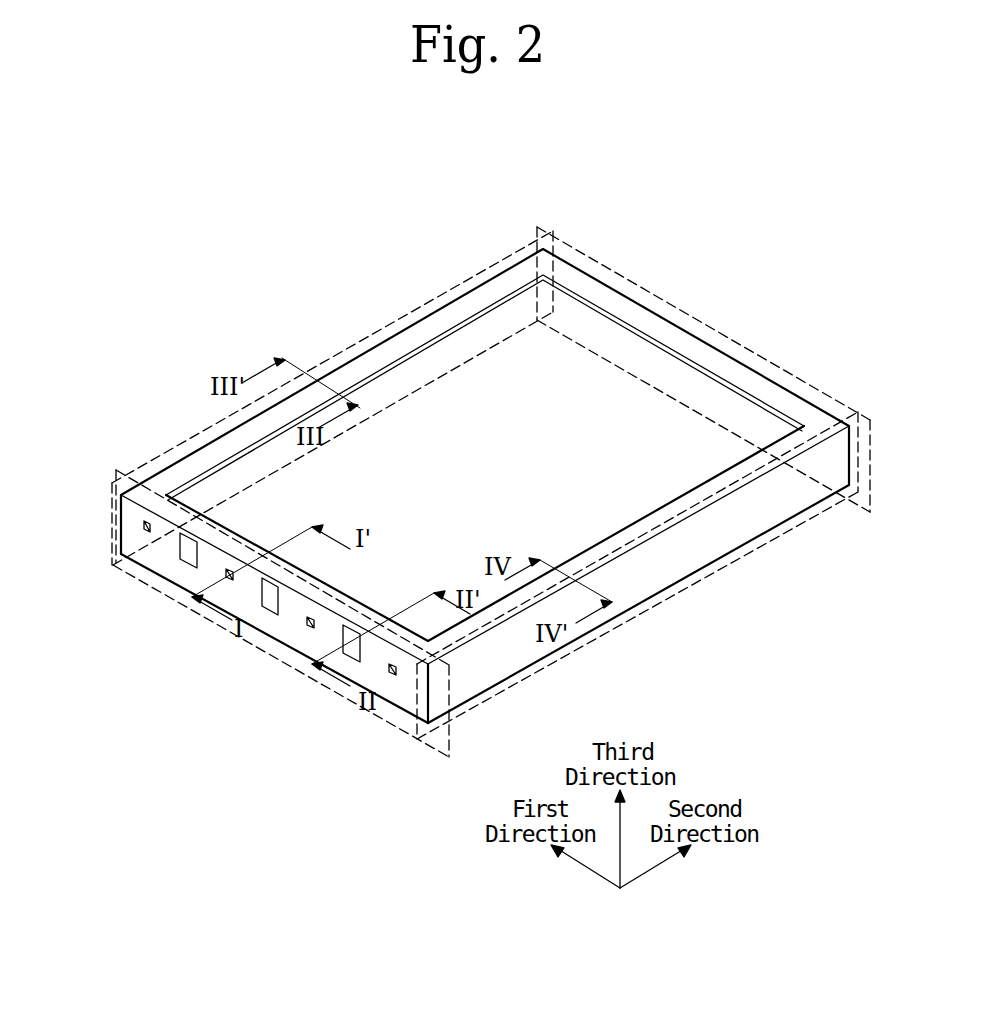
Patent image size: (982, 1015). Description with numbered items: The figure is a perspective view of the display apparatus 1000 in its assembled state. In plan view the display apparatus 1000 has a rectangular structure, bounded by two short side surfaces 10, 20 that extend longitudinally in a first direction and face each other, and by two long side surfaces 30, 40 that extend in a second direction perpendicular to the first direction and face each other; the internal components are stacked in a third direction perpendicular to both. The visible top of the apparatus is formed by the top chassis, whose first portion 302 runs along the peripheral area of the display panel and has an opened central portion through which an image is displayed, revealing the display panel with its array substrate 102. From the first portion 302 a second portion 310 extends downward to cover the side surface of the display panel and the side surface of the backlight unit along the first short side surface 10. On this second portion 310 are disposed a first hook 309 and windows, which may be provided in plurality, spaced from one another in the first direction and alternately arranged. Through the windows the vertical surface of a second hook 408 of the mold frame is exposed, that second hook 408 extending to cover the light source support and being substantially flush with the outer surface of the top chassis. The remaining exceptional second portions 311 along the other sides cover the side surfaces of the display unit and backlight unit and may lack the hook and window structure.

The display apparatus 1000 is at (752, 205).
The first short side surface 10 is at (290, 666).
The short side surface 20 is at (662, 298).
The long side surface 30 is at (412, 304).
The long side surface 40 is at (650, 613).
The array substrate 102 is at (682, 385).
The first portion 302 is at (768, 388).
The first hook 309 is at (146, 526).
The second portion 310 is at (292, 632).
The exceptional second portions 311 is at (690, 553).
The second hook 408 is at (180, 552).